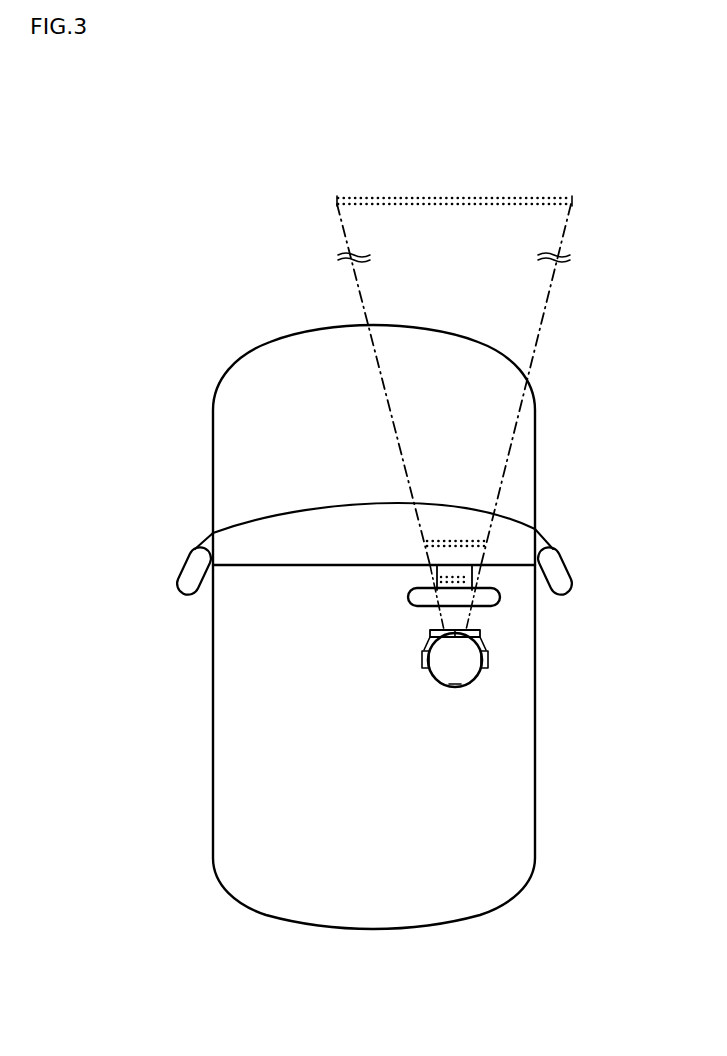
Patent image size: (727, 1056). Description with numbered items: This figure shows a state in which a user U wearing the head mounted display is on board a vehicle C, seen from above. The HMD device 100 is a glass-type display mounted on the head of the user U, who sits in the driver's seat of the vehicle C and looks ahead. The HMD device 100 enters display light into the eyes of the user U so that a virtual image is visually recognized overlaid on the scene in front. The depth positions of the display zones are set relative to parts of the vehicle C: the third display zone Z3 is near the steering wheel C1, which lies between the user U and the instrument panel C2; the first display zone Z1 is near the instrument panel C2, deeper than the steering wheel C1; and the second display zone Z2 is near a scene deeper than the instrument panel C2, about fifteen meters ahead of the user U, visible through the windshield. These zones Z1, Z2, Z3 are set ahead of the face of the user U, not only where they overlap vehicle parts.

The vehicle C is at (540, 493).
The steering wheel C1 is at (502, 602).
The instrument panel C2 is at (511, 561).
The first display zone Z1 is at (423, 540).
The second display zone Z2 is at (335, 200).
The third display zone Z3 is at (431, 576).
The HMD device 100 is at (481, 638).
The user U is at (455, 686).